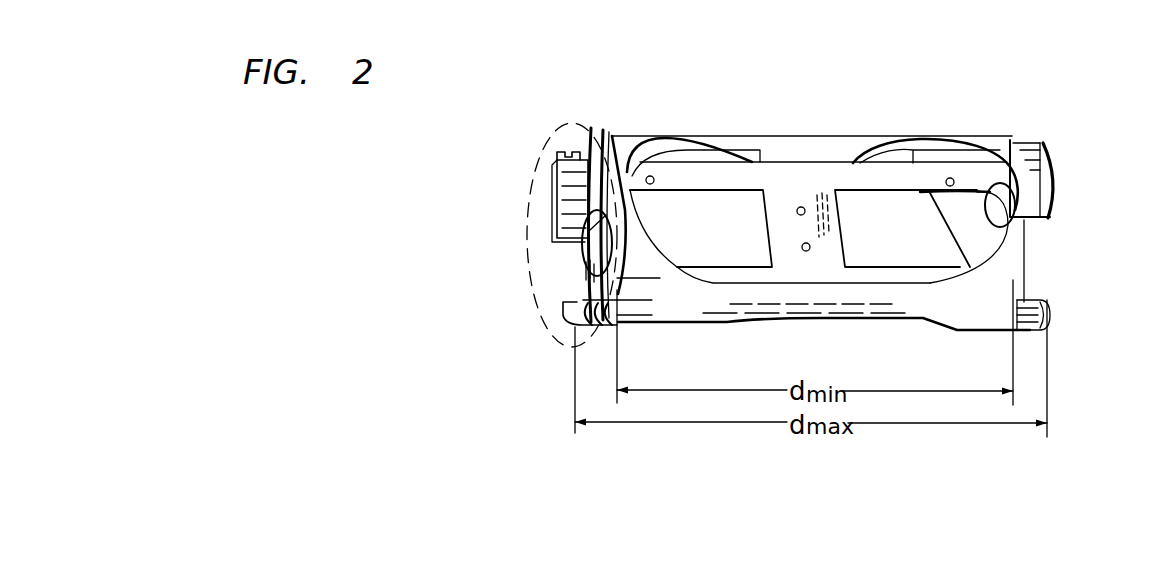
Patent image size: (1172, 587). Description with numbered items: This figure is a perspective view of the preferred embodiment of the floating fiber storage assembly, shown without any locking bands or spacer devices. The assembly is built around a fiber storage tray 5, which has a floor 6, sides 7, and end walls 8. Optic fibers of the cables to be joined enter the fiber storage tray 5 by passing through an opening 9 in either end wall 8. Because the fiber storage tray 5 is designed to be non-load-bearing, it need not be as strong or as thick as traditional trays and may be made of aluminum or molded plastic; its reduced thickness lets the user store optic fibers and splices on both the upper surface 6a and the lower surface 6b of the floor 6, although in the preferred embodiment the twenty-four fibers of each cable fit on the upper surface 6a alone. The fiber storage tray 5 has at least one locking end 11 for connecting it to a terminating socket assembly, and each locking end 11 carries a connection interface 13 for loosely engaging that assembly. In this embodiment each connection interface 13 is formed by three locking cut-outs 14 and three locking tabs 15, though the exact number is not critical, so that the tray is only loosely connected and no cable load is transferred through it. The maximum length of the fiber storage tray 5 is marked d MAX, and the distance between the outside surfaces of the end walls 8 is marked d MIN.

The fiber storage tray 5 is at (802, 132).
The floor 6 is at (847, 233).
The upper surface 6a is at (793, 187).
The lower surface 6b is at (767, 237).
The sides 7 is at (977, 157).
The end walls 8 is at (585, 267).
The opening 9 is at (597, 242).
The locking end 11 is at (585, 132).
The connection interface 13 is at (555, 133).
The locking cut-outs 14 is at (617, 293).
The locking tabs 15 is at (567, 200).